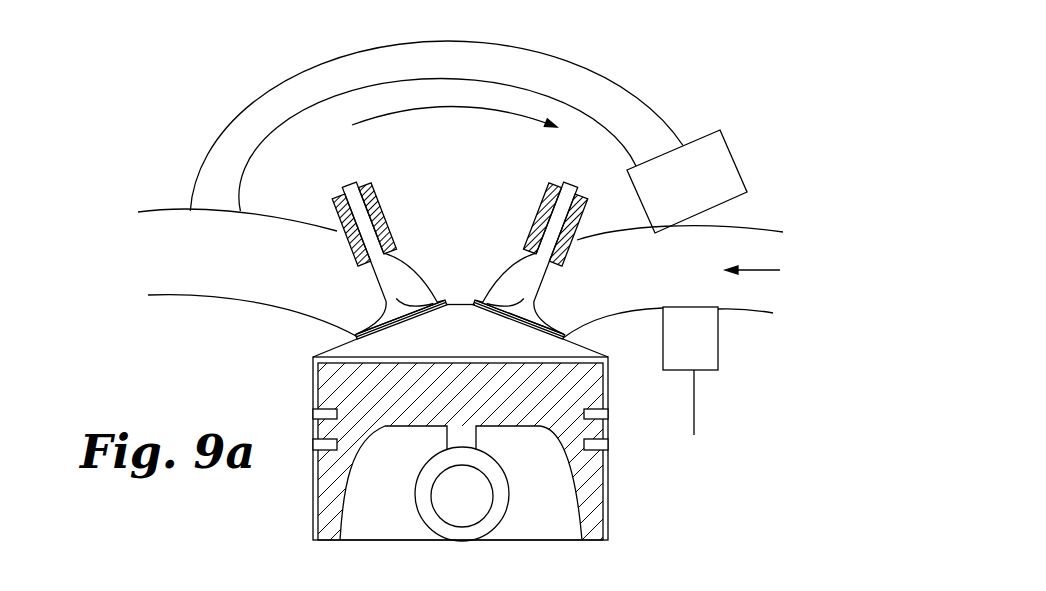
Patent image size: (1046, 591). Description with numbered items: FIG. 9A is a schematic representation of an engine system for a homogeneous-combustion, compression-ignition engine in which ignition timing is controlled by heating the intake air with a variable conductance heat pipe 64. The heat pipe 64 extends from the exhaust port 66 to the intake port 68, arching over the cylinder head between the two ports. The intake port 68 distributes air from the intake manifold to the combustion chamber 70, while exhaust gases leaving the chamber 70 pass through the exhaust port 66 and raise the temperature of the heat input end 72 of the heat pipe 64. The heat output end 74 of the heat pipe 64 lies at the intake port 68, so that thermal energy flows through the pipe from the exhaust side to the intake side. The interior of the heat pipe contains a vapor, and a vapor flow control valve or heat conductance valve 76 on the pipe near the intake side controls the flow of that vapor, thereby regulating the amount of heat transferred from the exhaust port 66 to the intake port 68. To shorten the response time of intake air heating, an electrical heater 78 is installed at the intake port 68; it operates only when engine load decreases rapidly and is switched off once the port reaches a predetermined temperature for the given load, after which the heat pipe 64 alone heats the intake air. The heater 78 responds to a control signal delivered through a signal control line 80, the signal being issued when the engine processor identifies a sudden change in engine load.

The variable conductance heat pipe 64 is at (603, 100).
The exhaust port 66 is at (297, 250).
The intake port 68 is at (617, 242).
The combustion chamber 70 is at (474, 342).
The heat input end 72 is at (197, 175).
The heat output end 74 is at (648, 137).
The heat conductance valve 76 is at (708, 150).
The electrical heater 78 is at (718, 338).
The signal control line 80 is at (695, 392).